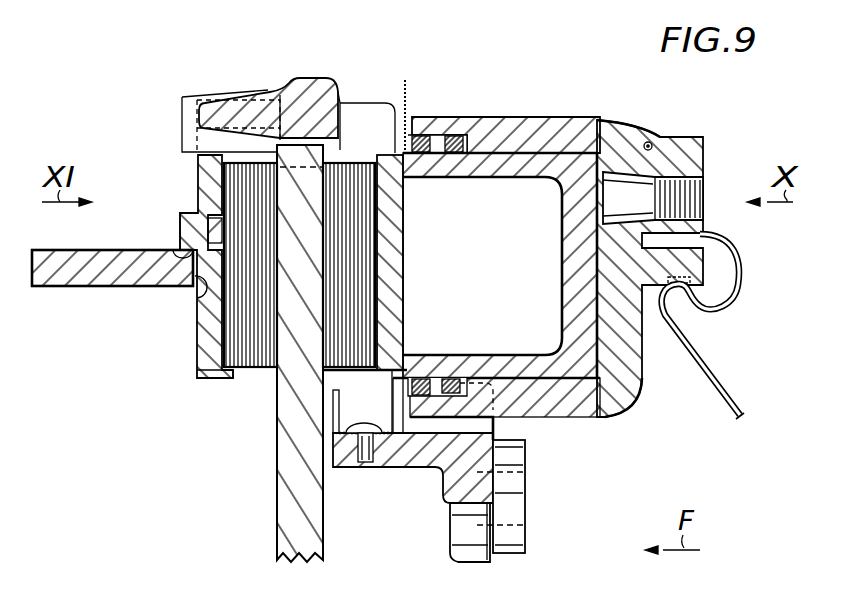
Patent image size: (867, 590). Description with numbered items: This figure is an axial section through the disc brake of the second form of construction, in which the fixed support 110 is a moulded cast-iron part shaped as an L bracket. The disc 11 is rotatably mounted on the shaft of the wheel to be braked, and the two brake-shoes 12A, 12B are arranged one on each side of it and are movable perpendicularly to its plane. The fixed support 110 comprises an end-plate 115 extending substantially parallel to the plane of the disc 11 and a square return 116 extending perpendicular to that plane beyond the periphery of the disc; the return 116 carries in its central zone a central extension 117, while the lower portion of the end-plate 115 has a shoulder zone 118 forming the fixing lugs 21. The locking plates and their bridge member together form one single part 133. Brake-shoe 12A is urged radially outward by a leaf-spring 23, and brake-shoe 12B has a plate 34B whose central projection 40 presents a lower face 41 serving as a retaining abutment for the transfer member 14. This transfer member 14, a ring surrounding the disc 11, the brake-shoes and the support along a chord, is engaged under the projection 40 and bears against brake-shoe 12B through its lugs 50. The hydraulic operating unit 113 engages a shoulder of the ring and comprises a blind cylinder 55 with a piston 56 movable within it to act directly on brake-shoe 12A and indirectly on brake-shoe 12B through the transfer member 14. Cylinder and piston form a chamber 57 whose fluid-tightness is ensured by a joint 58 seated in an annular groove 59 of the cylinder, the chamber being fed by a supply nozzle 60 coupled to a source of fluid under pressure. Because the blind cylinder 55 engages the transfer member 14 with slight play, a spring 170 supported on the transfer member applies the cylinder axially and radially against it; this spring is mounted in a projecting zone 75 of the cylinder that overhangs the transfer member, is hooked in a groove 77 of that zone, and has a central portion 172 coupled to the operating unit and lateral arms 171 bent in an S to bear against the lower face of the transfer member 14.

The disc 11 is at (270, 504).
The brake-shoe 12A is at (373, 150).
The brake-shoe 12B is at (197, 187).
The transfer member 14 is at (83, 290).
The fixing lug 21 is at (520, 538).
The leaf-spring 23 is at (333, 405).
The plate 34B is at (204, 376).
The projection 40 is at (182, 214).
The lower face 41 is at (180, 248).
The lug 50 is at (198, 296).
The blind cylinder 55 is at (590, 125).
The piston 56 is at (624, 398).
The chamber 57 is at (602, 352).
The joint 58 is at (462, 140).
The annular groove 59 is at (458, 375).
The supply nozzle 60 is at (705, 190).
The projecting zone 75 is at (718, 132).
The groove 77 is at (658, 142).
The fixed support 110 is at (497, 568).
The hydraulic operating unit 113 is at (540, 110).
The end-plate 115 is at (351, 98).
The square return 116 is at (263, 88).
The central extension 117 is at (220, 110).
The shoulder zone 118 is at (503, 486).
The single part 133 is at (412, 75).
The spring 170 is at (728, 425).
The lateral arm 171 is at (722, 375).
The central portion 172 is at (649, 141).